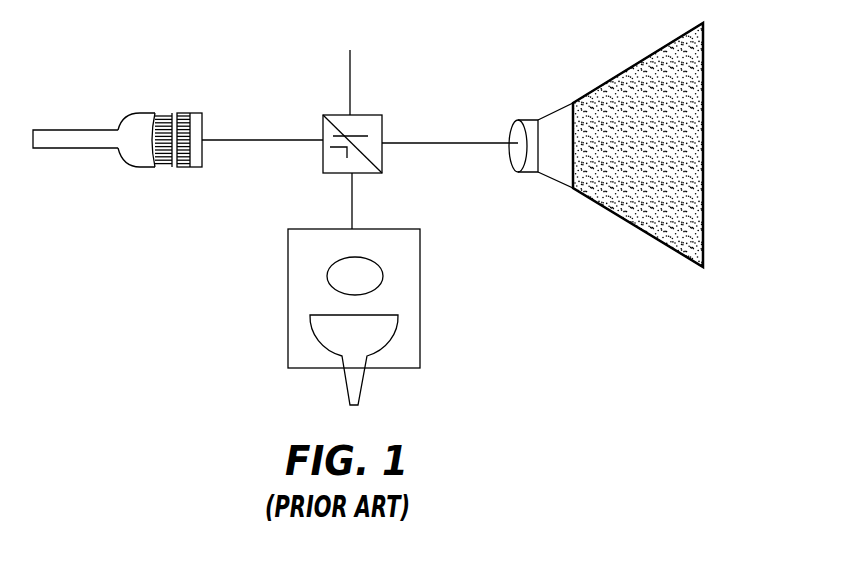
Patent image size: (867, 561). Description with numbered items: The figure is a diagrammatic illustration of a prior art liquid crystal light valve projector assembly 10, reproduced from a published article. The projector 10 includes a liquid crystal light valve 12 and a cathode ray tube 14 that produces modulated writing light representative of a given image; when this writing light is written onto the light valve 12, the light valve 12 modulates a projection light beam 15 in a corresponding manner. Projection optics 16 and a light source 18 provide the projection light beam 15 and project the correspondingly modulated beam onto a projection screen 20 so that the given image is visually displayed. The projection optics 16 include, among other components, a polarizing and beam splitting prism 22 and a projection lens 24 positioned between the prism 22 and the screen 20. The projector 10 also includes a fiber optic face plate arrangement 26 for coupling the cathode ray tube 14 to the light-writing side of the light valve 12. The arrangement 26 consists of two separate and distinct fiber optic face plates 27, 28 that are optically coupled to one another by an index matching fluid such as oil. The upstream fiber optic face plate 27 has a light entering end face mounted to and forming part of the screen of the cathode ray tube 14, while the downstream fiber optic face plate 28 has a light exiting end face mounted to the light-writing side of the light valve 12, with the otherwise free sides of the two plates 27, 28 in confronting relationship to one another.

The liquid crystal light valve projector assembly 10 is at (543, 306).
The liquid crystal light valve 12 is at (217, 131).
The cathode ray tube 14 is at (82, 128).
The projection light beam 15 is at (439, 143).
The projection optics 16 is at (473, 85).
The light source 18 is at (337, 337).
The projection screen 20 is at (704, 85).
The polarizing prism 22 is at (383, 121).
The projection lens 24 is at (512, 162).
The fiber optic face plate arrangement 26 is at (168, 175).
The upstream fiber optic face plate 27 is at (164, 112).
The downstream fiber optic face plate 28 is at (183, 112).